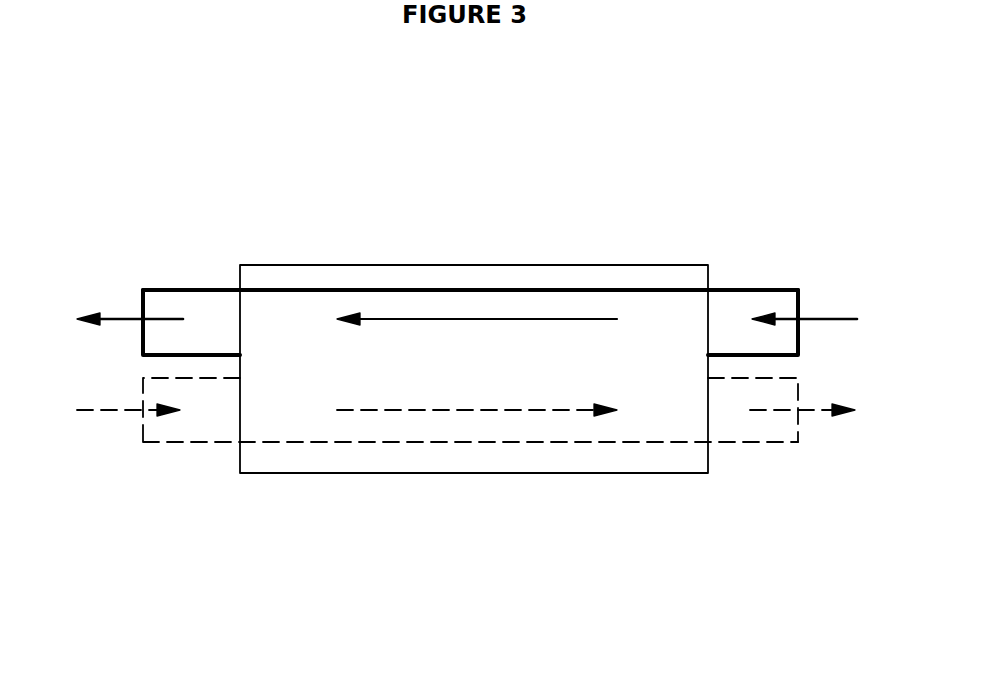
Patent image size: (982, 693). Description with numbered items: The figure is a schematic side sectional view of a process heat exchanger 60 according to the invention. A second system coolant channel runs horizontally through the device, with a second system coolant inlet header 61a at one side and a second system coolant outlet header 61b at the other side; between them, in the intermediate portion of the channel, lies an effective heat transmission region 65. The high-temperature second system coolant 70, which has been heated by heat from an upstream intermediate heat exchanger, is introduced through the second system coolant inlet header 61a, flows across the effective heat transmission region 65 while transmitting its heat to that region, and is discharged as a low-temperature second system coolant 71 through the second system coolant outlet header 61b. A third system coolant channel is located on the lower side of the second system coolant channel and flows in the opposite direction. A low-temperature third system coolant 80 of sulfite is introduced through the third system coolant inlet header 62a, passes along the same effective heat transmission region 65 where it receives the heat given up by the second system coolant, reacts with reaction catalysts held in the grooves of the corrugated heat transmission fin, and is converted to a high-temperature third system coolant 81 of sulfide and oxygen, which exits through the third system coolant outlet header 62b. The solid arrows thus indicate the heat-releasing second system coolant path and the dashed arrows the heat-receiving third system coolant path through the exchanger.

The process heat exchanger 60 is at (534, 180).
The second system coolant inlet header 61a is at (757, 290).
The second system coolant outlet header 61b is at (198, 290).
The third system coolant inlet header 62a is at (188, 443).
The third system coolant outlet header 62b is at (755, 443).
The effective heat transmission region 65 is at (480, 473).
The high-temperature second system coolant 70 is at (825, 316).
The low-temperature second system coolant 71 is at (116, 315).
The low-temperature third system coolant 80 is at (113, 413).
The high-temperature third system coolant 81 is at (822, 415).